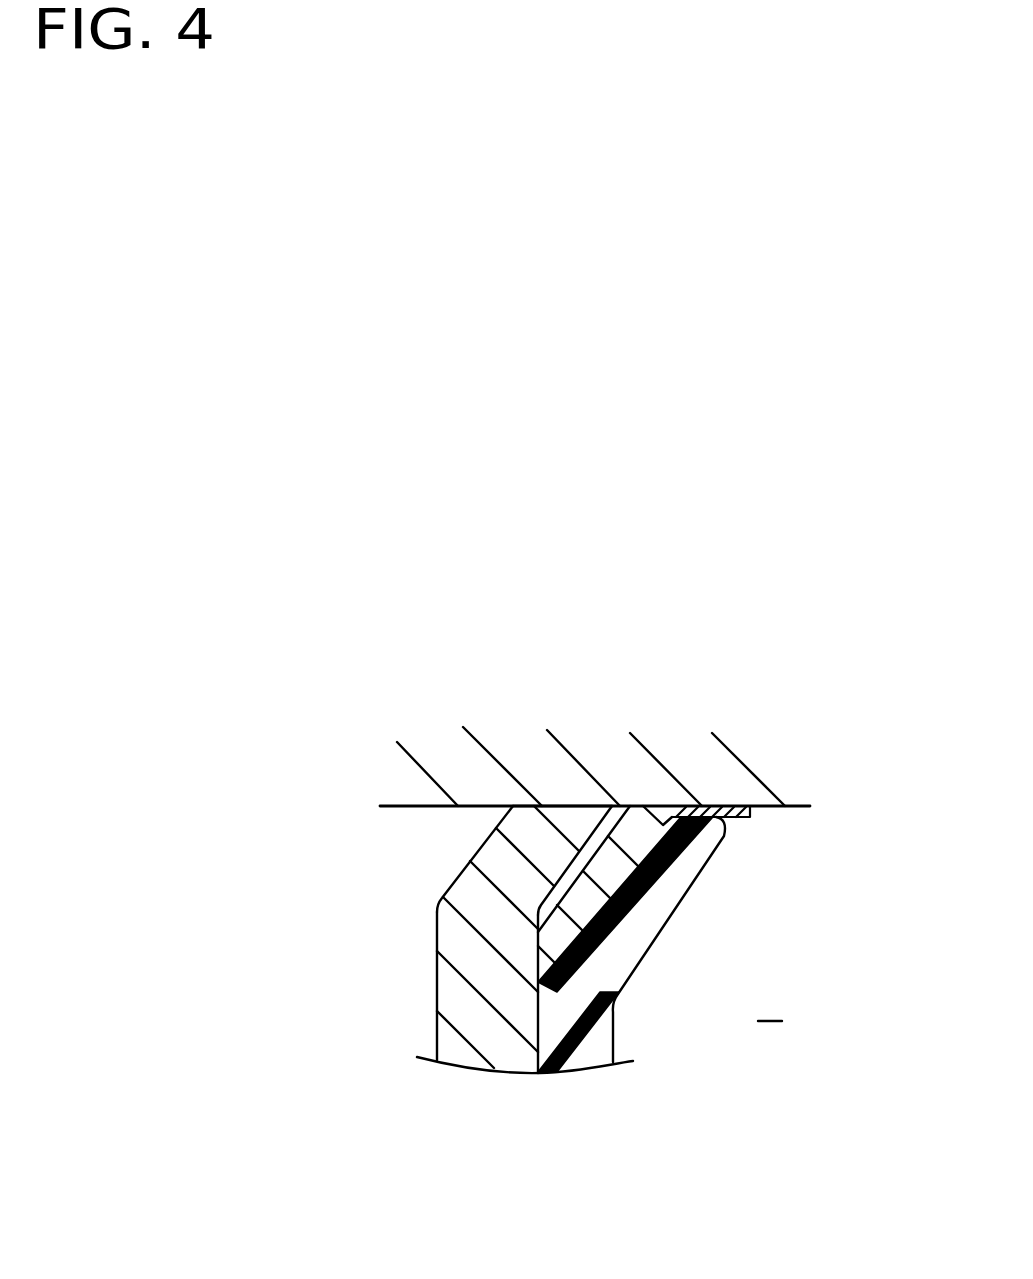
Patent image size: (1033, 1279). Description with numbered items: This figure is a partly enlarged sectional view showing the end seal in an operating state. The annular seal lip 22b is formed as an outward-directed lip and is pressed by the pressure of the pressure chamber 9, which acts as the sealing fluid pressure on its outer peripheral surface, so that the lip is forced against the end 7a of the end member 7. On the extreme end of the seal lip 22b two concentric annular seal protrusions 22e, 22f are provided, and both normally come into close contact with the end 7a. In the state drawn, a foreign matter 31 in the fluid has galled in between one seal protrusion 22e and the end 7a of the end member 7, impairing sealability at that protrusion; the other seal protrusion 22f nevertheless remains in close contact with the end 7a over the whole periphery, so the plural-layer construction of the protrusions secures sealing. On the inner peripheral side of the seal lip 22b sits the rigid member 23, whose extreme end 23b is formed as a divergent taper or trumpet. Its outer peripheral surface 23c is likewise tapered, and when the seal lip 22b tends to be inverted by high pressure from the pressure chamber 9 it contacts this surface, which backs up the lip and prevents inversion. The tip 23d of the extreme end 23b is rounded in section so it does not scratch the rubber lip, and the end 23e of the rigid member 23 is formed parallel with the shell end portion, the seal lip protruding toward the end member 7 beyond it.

The end member 7 is at (765, 767).
The end of the end member 7a is at (787, 810).
The pressure chamber 9 is at (770, 1004).
The seal lip 22b is at (585, 1047).
The seal protrusion 22e is at (702, 807).
The seal protrusion 22f is at (643, 804).
The rigid member 23 is at (493, 1040).
The extreme end of the rigid member 23b is at (505, 863).
The outer peripheral surface of the extreme end 23c is at (652, 940).
The tip of the extreme end 23d is at (618, 803).
The end of the extreme end 23e is at (557, 800).
The foreign matter 31 is at (750, 820).